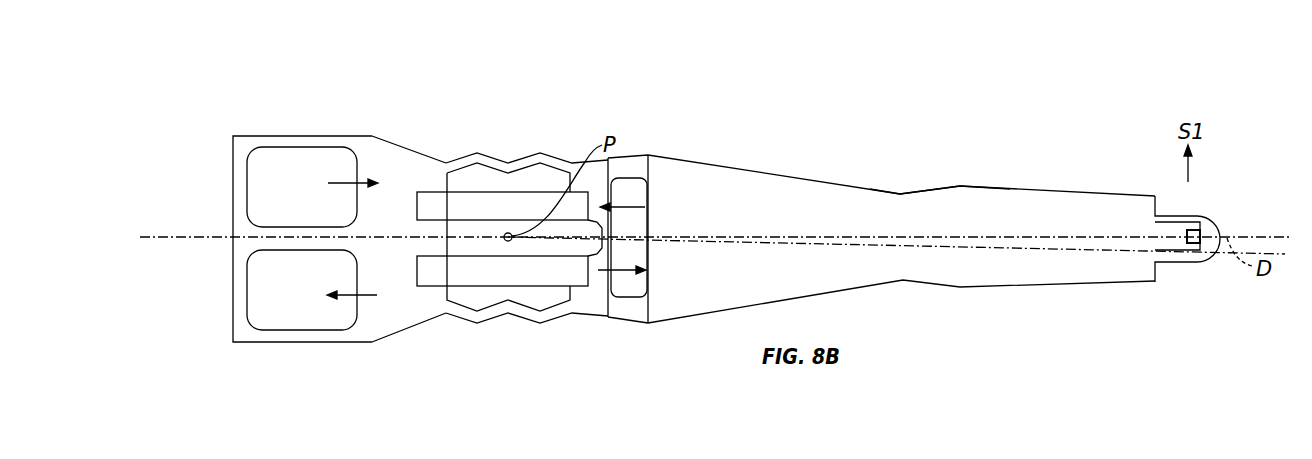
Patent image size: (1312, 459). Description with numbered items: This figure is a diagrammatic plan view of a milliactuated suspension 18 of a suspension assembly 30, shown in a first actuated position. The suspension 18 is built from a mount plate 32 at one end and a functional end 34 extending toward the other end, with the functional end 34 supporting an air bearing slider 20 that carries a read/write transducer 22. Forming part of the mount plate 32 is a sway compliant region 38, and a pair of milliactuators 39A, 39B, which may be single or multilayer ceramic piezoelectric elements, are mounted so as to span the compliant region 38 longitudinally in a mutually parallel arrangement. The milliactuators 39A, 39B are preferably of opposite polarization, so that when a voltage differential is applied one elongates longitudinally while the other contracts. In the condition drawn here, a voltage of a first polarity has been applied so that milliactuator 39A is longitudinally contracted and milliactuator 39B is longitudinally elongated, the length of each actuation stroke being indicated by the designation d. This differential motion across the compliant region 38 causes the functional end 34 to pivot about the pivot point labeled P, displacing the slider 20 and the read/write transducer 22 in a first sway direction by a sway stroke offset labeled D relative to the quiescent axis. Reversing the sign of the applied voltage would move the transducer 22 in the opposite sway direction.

The suspension assembly 30 is at (224, 47).
The mount plate 32 is at (258, 134).
The sway compliant region 38 is at (490, 176).
The milliactuator 39A is at (485, 218).
The milliactuator 39B is at (485, 283).
The milliactuated suspension 18 is at (767, 147).
The functional end 34 is at (866, 187).
The air bearing slider 20 is at (1157, 216).
The read/write transducer 22 is at (1196, 229).